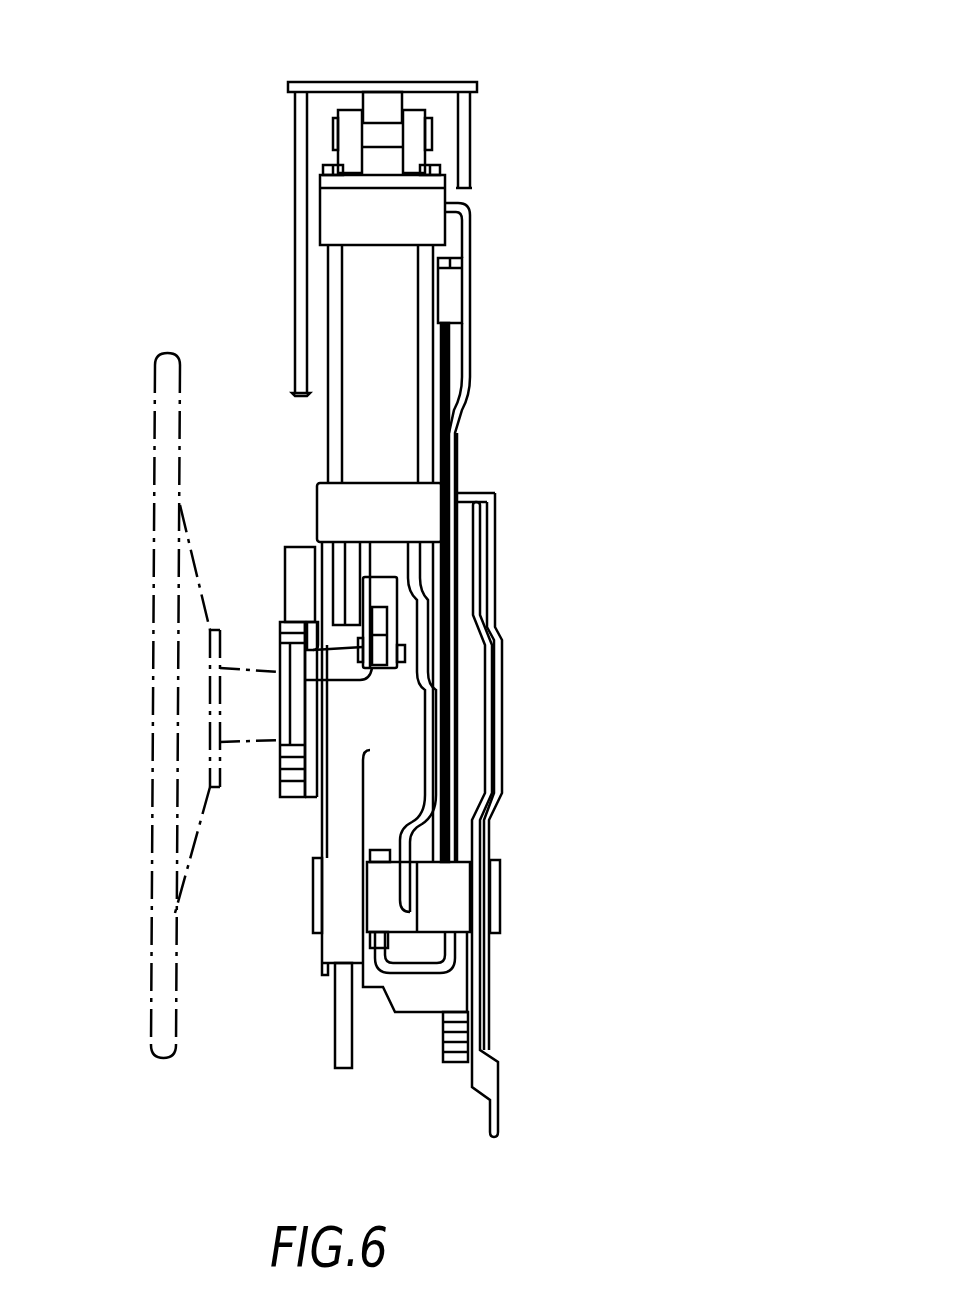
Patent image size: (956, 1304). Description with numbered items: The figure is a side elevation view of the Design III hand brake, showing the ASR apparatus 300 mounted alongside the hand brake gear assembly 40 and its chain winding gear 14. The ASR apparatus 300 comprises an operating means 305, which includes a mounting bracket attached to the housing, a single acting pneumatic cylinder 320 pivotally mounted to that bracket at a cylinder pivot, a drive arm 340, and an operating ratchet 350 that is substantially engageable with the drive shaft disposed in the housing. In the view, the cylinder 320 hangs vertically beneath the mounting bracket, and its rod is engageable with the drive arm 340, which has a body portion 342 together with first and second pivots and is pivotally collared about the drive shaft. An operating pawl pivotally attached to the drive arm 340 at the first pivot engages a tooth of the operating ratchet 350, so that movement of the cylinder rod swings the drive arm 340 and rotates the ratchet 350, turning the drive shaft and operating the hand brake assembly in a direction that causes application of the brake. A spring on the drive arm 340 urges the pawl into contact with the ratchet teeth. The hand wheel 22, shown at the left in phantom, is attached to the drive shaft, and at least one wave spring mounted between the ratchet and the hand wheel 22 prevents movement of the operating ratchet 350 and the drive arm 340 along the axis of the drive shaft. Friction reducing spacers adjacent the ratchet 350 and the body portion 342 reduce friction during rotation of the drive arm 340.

The ASR apparatus 300 is at (537, 130).
The operating means 305 is at (336, 62).
The single acting pneumatic cylinder 320 is at (286, 232).
The drive arm 340 is at (467, 687).
The body portion 342 is at (342, 670).
The operating ratchet 350 is at (283, 800).
The hand brake gear assembly 40 is at (393, 1097).
The chain winding gear 14 is at (450, 1062).
The hand wheel 22 is at (165, 945).